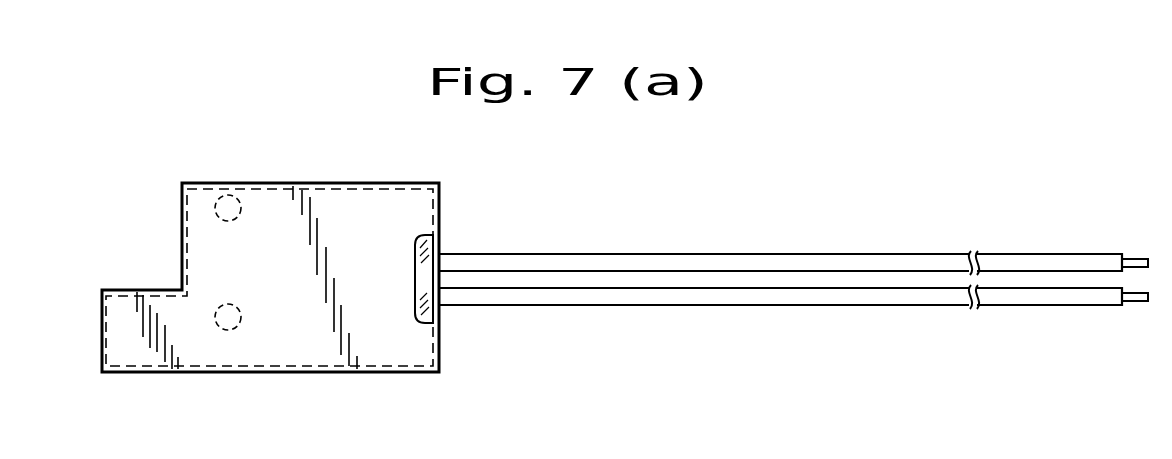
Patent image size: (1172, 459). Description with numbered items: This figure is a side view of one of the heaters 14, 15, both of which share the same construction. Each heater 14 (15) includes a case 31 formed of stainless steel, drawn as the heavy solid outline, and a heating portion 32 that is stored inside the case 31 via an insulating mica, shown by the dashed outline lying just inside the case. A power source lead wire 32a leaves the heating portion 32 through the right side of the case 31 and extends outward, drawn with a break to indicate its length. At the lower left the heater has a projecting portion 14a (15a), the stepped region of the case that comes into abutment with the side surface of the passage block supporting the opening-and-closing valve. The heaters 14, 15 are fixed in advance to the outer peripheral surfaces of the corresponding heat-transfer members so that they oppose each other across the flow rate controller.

The heater 14 is at (301, 241).
The heater 15 is at (270, 277).
The projecting portion 14a is at (180, 375).
The projecting portion 15a is at (128, 350).
The case 31 is at (262, 183).
The heating portion 32 is at (345, 187).
The power source lead wire 32a is at (714, 254).